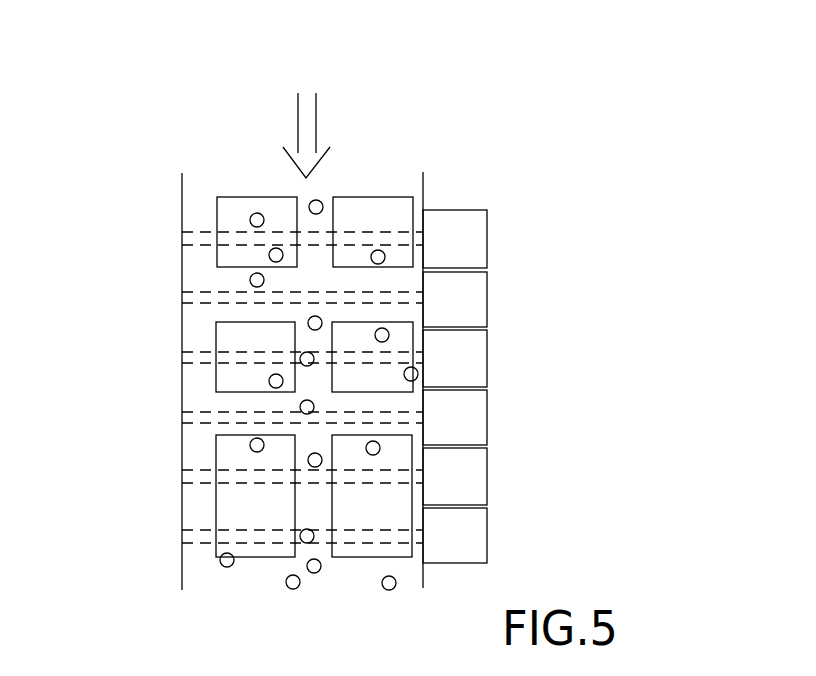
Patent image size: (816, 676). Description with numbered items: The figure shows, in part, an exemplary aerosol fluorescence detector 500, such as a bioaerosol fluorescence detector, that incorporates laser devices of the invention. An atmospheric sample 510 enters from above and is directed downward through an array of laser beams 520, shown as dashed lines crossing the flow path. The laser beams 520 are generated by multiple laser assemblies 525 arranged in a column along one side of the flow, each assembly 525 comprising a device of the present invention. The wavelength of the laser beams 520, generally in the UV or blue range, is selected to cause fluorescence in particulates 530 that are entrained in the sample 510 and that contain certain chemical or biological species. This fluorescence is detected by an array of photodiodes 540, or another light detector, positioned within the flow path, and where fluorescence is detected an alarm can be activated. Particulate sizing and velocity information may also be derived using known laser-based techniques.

The aerosol fluorescence detector 500 is at (578, 188).
The atmospheric sample 510 is at (297, 125).
The array of laser beams 520 is at (178, 238).
The laser assemblies 525 is at (499, 242).
The particulates 530 is at (303, 562).
The array of photodiodes 540 is at (242, 195).